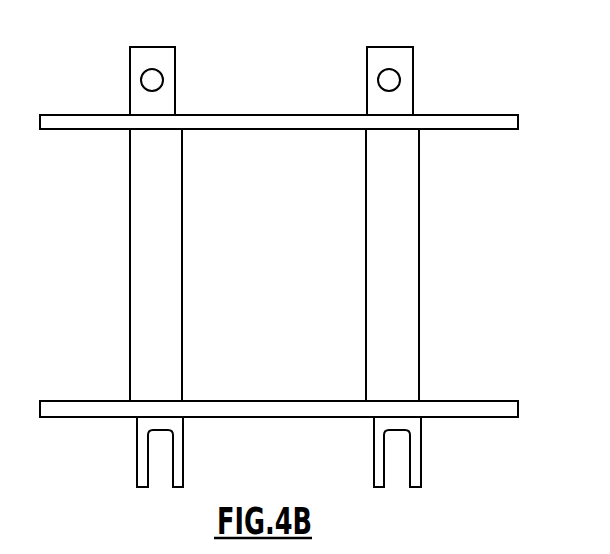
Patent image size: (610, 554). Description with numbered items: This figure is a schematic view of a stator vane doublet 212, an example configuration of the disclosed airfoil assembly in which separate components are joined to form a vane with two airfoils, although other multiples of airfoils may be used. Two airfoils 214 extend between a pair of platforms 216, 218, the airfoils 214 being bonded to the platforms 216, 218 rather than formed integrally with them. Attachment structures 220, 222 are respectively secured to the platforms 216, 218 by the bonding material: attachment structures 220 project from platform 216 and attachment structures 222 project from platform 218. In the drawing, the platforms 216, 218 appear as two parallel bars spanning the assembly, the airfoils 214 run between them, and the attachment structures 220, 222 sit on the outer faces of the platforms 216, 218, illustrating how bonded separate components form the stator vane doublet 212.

The stator vane doublet 212 is at (303, 259).
The airfoils 214 is at (178, 300).
The platform 216 is at (473, 400).
The platform 218 is at (465, 125).
The attachment structure 220 is at (380, 447).
The attachment structure 222 is at (367, 84).